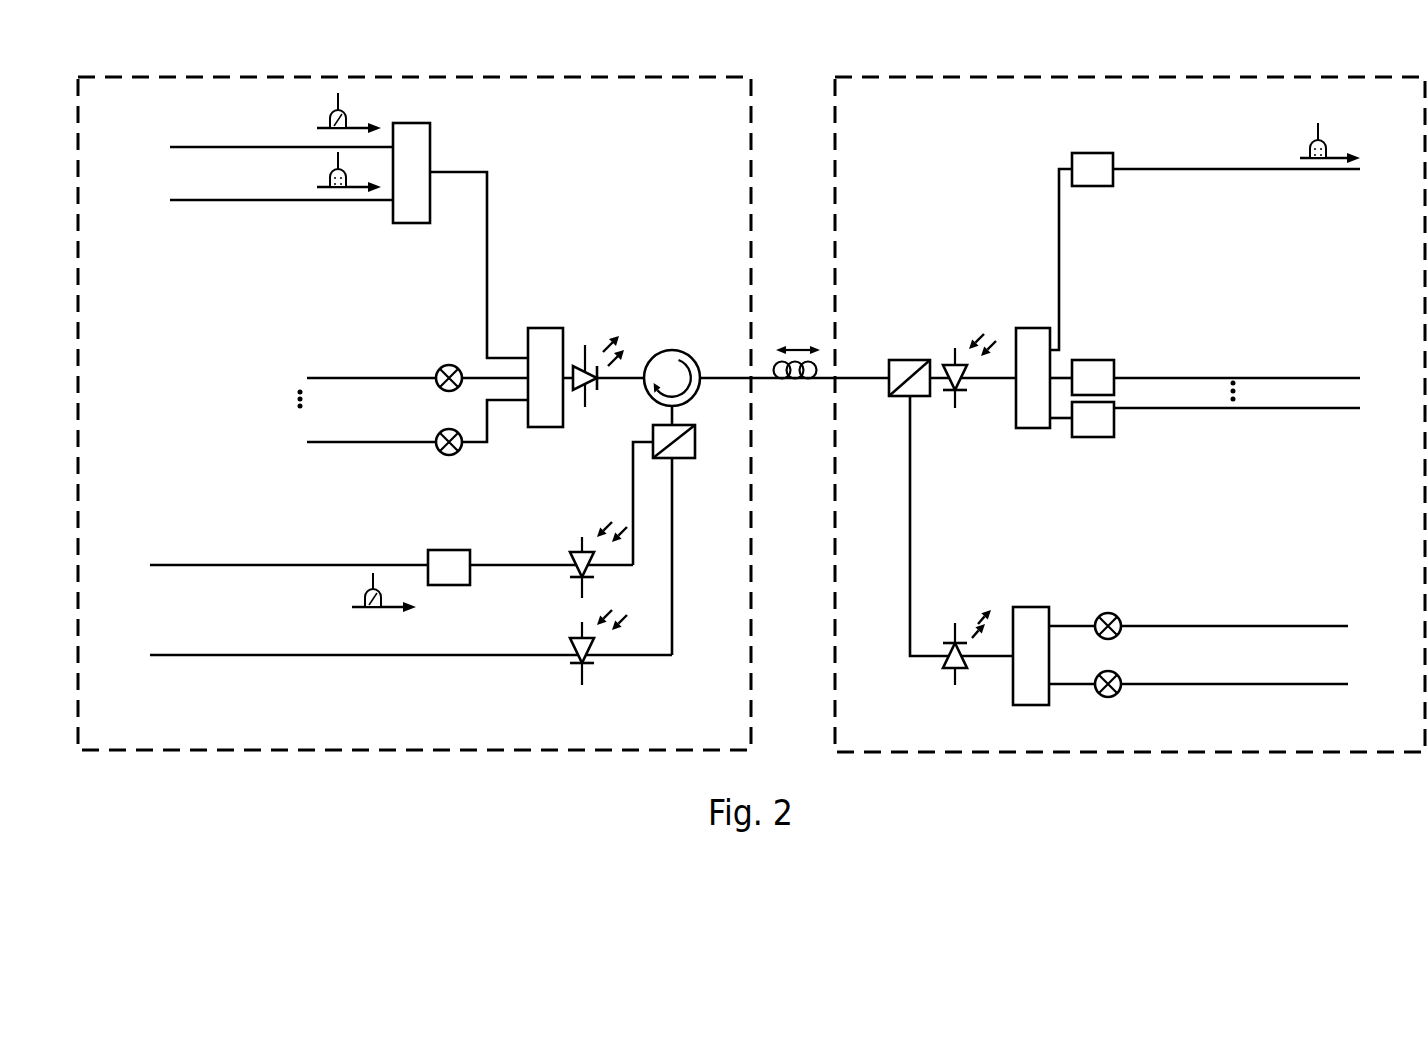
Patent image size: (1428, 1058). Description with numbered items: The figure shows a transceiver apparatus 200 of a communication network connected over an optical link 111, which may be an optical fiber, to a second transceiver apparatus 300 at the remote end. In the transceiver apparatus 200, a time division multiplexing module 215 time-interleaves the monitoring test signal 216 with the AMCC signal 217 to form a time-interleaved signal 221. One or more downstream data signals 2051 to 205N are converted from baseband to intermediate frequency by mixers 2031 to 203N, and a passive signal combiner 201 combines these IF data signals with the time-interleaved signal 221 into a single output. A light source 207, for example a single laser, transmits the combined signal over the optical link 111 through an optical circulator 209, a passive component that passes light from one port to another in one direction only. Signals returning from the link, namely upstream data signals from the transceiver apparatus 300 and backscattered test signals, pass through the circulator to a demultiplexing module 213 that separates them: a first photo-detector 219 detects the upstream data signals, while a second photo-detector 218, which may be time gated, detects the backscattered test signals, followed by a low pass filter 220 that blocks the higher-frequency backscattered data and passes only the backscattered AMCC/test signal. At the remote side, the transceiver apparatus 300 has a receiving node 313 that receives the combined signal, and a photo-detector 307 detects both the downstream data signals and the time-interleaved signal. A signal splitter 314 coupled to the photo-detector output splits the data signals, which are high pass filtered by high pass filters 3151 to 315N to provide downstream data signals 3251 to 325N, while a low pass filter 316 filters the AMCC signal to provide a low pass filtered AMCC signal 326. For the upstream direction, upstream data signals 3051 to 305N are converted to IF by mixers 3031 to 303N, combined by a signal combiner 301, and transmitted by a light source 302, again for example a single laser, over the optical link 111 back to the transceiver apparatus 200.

The transceiver apparatus 200 is at (590, 77).
The transceiver apparatus 300 is at (1215, 77).
The test signal 216 is at (316, 150).
The AMCC signal 217 is at (315, 203).
The time division multiplexing module 215 is at (432, 203).
The time-interleaved signal 221 is at (488, 198).
The downstream data signal 2051 is at (418, 377).
The downstream data signal 205N is at (337, 443).
The mixer 2031 is at (462, 370).
The mixer 203N is at (462, 452).
The signal combiner 201 is at (538, 428).
The light source 207 is at (592, 392).
The optical circulator 209 is at (697, 395).
The demultiplexing module 213 is at (683, 460).
The optical link 111 is at (770, 385).
The low pass filter 220 is at (442, 548).
The second photo-detector 218 is at (577, 552).
The first photo-detector 219 is at (577, 640).
The receiving node 313 is at (912, 358).
The photo-detector 307 is at (962, 392).
The signal splitter 314 is at (1033, 428).
The high pass filter 3151 is at (1097, 360).
The high pass filter 315N is at (1087, 437).
The low pass filter 316 is at (1102, 186).
The low pass filtered AMCC signal 326 is at (1265, 170).
The downstream data signal 3251 is at (1350, 376).
The downstream data signal 325N is at (1350, 407).
The light source 302 is at (947, 672).
The signal combiner 301 is at (1010, 693).
The mixer 3031 is at (1118, 613).
The mixer 303N is at (1097, 690).
The data signal 3051 is at (1338, 622).
The data signal 305N is at (1297, 685).